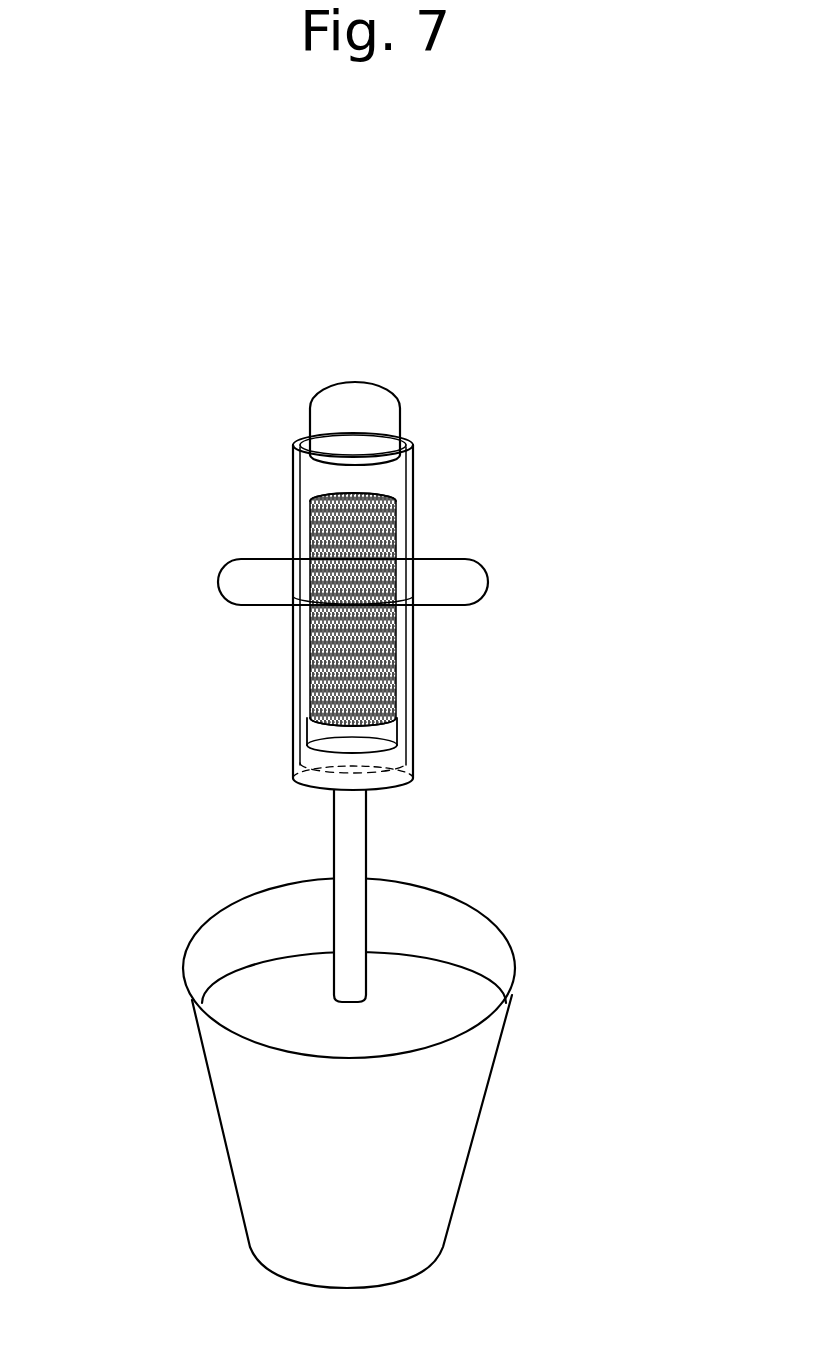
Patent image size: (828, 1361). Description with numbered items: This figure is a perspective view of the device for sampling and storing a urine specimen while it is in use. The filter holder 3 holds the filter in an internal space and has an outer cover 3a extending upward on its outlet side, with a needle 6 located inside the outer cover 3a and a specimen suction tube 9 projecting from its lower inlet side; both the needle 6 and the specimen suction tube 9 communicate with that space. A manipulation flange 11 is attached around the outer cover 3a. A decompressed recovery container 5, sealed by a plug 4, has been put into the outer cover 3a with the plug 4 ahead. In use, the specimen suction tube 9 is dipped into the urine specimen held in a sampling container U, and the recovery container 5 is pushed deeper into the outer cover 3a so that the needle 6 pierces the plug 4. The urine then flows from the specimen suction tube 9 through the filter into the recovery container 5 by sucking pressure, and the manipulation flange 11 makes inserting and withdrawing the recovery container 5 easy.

The filter holder 3 is at (440, 742).
The outer cover 3a is at (290, 662).
The plug 4 is at (300, 751).
The recovery container 5 is at (306, 388).
The needle 6 is at (412, 660).
The specimen suction tube 9 is at (366, 850).
The manipulation flange 11 is at (458, 583).
The sampling container U is at (515, 950).